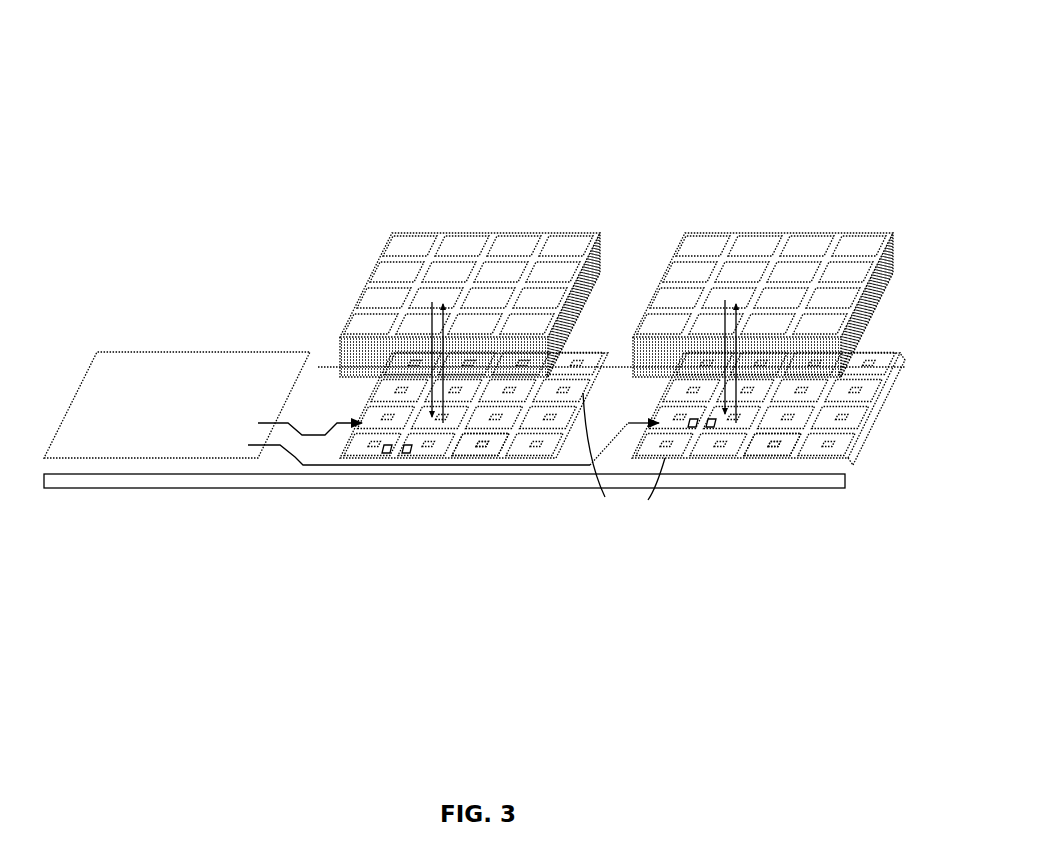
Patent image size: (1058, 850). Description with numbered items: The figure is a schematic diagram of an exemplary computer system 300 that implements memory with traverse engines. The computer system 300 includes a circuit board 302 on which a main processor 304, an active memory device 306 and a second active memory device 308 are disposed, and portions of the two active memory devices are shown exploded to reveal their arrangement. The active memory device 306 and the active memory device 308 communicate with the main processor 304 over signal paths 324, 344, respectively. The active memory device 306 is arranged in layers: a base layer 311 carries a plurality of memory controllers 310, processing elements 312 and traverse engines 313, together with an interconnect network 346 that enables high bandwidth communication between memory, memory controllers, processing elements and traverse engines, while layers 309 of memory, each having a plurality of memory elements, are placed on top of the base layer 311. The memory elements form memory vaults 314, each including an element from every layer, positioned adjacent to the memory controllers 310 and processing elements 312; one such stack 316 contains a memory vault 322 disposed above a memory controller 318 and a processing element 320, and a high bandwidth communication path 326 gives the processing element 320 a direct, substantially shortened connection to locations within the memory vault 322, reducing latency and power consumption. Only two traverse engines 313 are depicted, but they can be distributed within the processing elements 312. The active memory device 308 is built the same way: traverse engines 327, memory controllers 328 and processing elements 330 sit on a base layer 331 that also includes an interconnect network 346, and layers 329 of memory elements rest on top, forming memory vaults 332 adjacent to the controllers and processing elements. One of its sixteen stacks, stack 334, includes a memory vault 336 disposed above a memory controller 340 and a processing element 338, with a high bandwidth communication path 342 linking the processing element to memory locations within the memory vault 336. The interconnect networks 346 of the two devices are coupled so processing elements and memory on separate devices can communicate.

The computer system 300 is at (368, 94).
The circuit board 302 is at (200, 485).
The main processor 304 is at (177, 405).
The active memory device 306 is at (520, 231).
The active memory device 308 is at (752, 231).
The layers of memory 309 is at (342, 339).
The memory controllers 310 is at (492, 422).
The base layer 311 is at (457, 468).
The processing elements 312 is at (560, 423).
The traverse engines 313 is at (406, 454).
The memory vaults 314 is at (577, 272).
The stack 316 is at (410, 302).
The memory controller 318 is at (448, 423).
The processing element 320 is at (443, 423).
The memory vault 322 is at (422, 298).
The signal path 324 is at (340, 418).
The high bandwidth communication path 326 is at (429, 322).
The traverse engines 327 is at (710, 428).
The memory controllers 328 is at (785, 423).
The layers of memory elements 329 is at (898, 227).
The processing elements 330 is at (855, 423).
The base layer 331 is at (745, 468).
The memory vaults 332 is at (818, 250).
The stack 334 is at (738, 292).
The memory vault 336 is at (720, 302).
The processing element 338 is at (726, 425).
The memory controller 340 is at (737, 423).
The high bandwidth communication path 342 is at (721, 321).
The signal path 344 is at (313, 470).
The interconnect network 346 is at (624, 462).